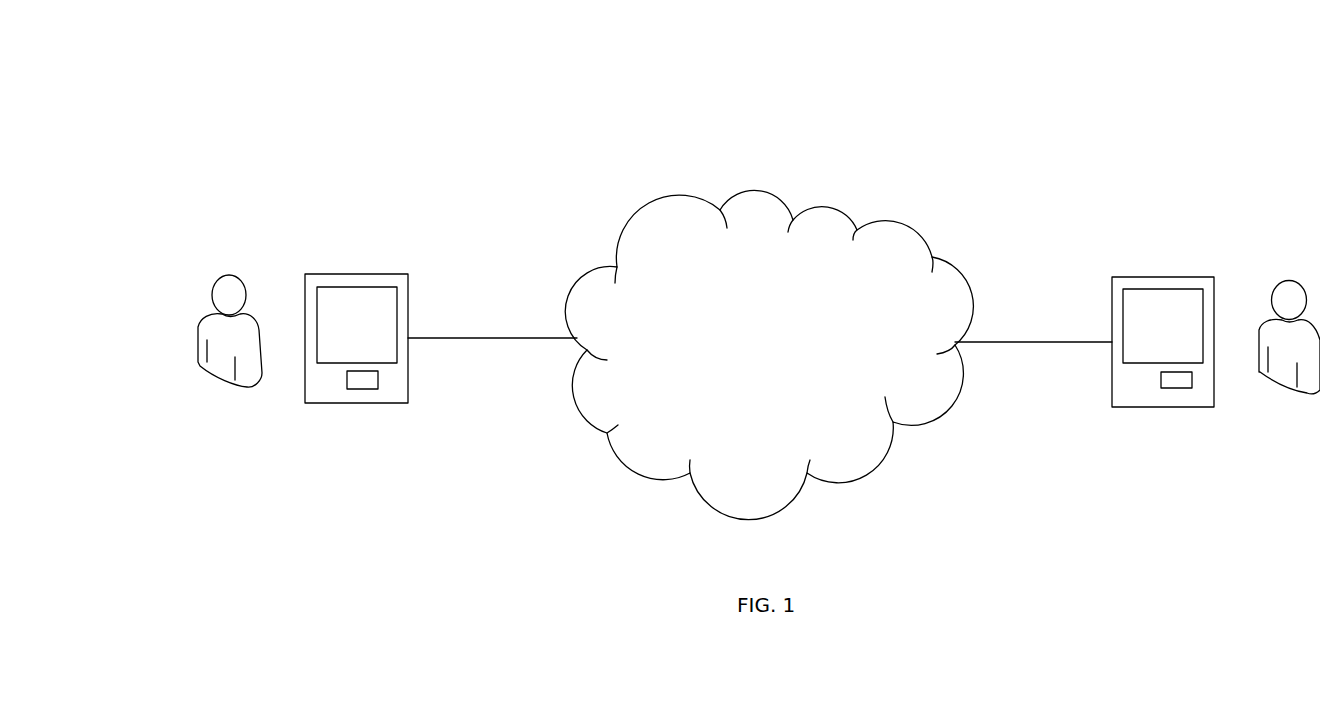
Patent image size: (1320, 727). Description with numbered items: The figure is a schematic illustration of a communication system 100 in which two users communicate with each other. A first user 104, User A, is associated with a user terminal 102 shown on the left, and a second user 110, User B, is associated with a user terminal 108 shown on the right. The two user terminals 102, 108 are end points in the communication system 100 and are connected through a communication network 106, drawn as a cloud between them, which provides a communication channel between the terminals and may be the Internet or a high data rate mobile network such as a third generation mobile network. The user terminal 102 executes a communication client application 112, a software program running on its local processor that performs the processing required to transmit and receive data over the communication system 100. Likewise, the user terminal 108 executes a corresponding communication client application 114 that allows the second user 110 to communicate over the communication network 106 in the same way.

The communication system 100 is at (312, 95).
The user terminal 102 is at (353, 403).
The first user 104 is at (229, 272).
The communication network 106 is at (875, 207).
The user terminal 108 is at (1158, 407).
The second user 110 is at (1290, 279).
The communication client application 112 is at (377, 388).
The communication client application 114 is at (1190, 387).